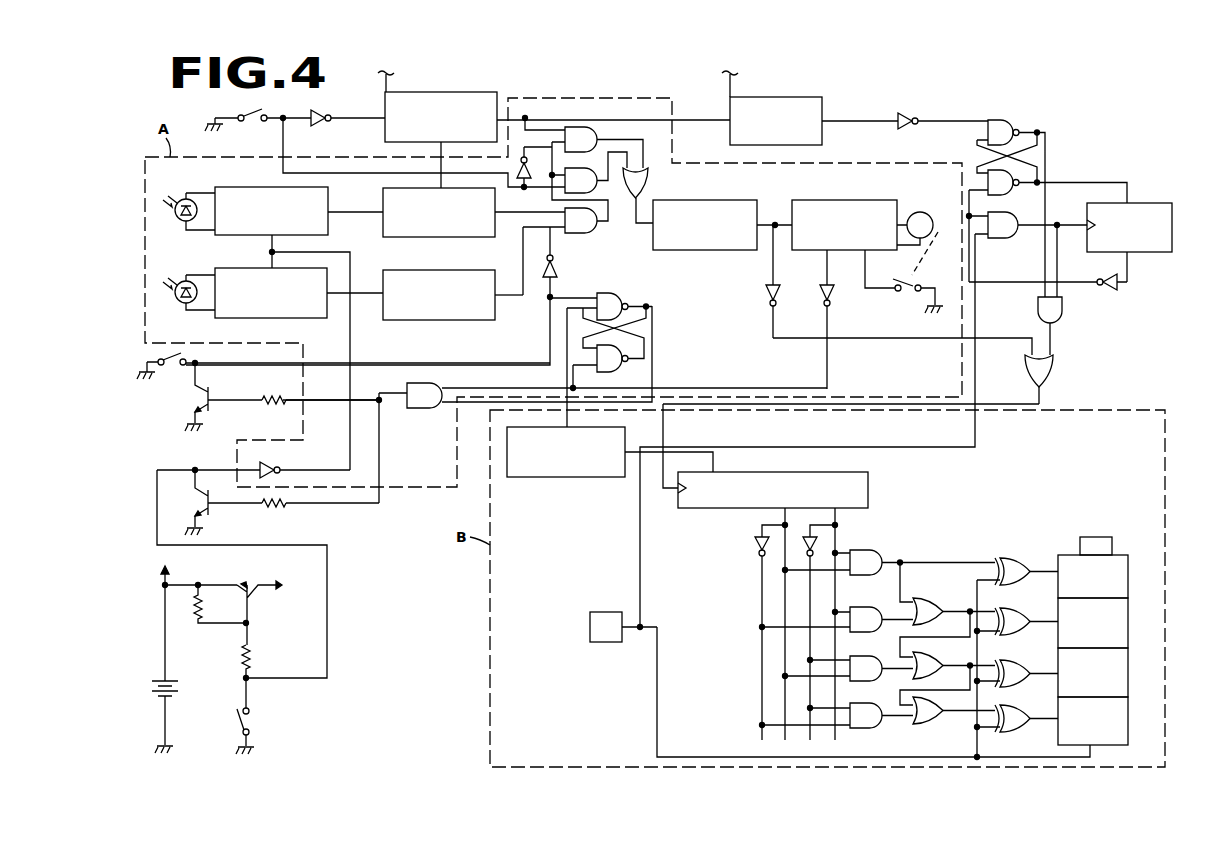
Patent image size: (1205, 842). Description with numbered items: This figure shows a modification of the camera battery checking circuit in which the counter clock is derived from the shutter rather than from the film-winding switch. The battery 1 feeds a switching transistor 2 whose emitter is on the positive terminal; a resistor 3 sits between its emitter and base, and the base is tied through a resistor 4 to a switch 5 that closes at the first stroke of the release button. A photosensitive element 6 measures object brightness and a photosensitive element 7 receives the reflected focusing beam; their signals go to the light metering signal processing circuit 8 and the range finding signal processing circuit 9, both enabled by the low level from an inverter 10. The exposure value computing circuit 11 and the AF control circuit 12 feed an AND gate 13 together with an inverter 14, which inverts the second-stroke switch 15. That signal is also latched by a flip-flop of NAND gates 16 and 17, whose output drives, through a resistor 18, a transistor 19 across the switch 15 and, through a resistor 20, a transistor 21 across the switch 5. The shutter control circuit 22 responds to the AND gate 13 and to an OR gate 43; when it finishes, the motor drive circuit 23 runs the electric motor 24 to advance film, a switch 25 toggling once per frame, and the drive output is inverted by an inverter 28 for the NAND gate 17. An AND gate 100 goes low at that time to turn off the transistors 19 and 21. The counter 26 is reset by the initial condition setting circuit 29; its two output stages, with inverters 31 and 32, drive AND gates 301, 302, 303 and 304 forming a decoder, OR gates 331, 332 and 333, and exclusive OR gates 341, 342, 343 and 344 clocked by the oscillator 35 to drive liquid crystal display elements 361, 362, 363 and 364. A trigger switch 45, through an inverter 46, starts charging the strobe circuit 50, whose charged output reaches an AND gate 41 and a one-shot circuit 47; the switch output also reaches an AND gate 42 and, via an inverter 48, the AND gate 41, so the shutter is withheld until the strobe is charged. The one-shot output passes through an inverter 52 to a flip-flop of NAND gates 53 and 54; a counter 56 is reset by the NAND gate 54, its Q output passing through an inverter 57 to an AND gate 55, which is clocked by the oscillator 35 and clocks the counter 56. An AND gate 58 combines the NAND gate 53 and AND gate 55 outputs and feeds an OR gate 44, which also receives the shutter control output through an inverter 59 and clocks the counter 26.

The battery 1 is at (180, 687).
The switching transistor 2 is at (246, 585).
The resistor 3 is at (204, 606).
The resistor 4 is at (253, 656).
The switch 5 is at (251, 715).
The photosensitive element 6 is at (180, 200).
The photosensitive element 7 is at (180, 283).
The light metering signal processing circuit 8 is at (225, 187).
The range finding signal processing circuit 9 is at (227, 268).
The inverter 10 is at (275, 464).
The exposure value computing circuit 11 is at (381, 199).
The automatic focusing (AF) control circuit 12 is at (468, 270).
The AND gate 13 is at (578, 233).
The inverter 14 is at (563, 270).
The switch 15 is at (172, 369).
The NAND gate 16 is at (607, 293).
The NAND gate 17 is at (612, 372).
The resistor 18 is at (269, 398).
The transistor 19 is at (192, 405).
The resistor 20 is at (273, 505).
The transistor 21 is at (193, 500).
The shutter control circuit 22 is at (732, 200).
The motor drive circuit 23 is at (872, 200).
The electric motor 24 is at (930, 216).
The switch 25 is at (905, 300).
The counter 26 is at (844, 478).
The inverter 28 is at (819, 292).
The initial condition setting circuit 29 is at (558, 477).
The inverter 31 is at (755, 545).
The inverter 32 is at (801, 545).
The clock pulse oscillator 35 is at (606, 612).
The AND gate 41 is at (597, 130).
The AND gate 42 is at (588, 168).
The OR gate 43 is at (649, 180).
The OR gate 44 is at (1054, 372).
The trigger switch 45 is at (251, 120).
The inverter 46 is at (321, 122).
The one-shot circuit 47 is at (814, 97).
The inverter 48 is at (527, 173).
The strobe circuit 50 is at (494, 92).
The inverter 52 is at (904, 112).
The NAND gate 53 is at (1000, 120).
The NAND gate 54 is at (1013, 195).
The AND gate 55 is at (1002, 239).
The counter 56 is at (1150, 203).
The inverter 57 is at (1108, 290).
The AND gate 58 is at (1038, 311).
The inverter 59 is at (766, 292).
The AND gate 100 is at (412, 384).
The AND gate 301 is at (864, 550).
The AND gate 302 is at (864, 607).
The AND gate 303 is at (864, 656).
The AND gate 304 is at (864, 704).
The OR gate 331 is at (930, 598).
The OR gate 332 is at (935, 653).
The OR gate 333 is at (937, 700).
The exclusive OR gate 341 is at (1007, 558).
The exclusive OR gate 342 is at (1016, 612).
The exclusive OR gate 343 is at (1016, 661).
The exclusive OR gate 344 is at (1016, 706).
The liquid crystal light shutter display element 361 is at (1128, 564).
The liquid crystal light shutter display element 362 is at (1128, 612).
The liquid crystal light shutter display element 363 is at (1128, 662).
The liquid crystal light shutter display element 364 is at (1128, 708).